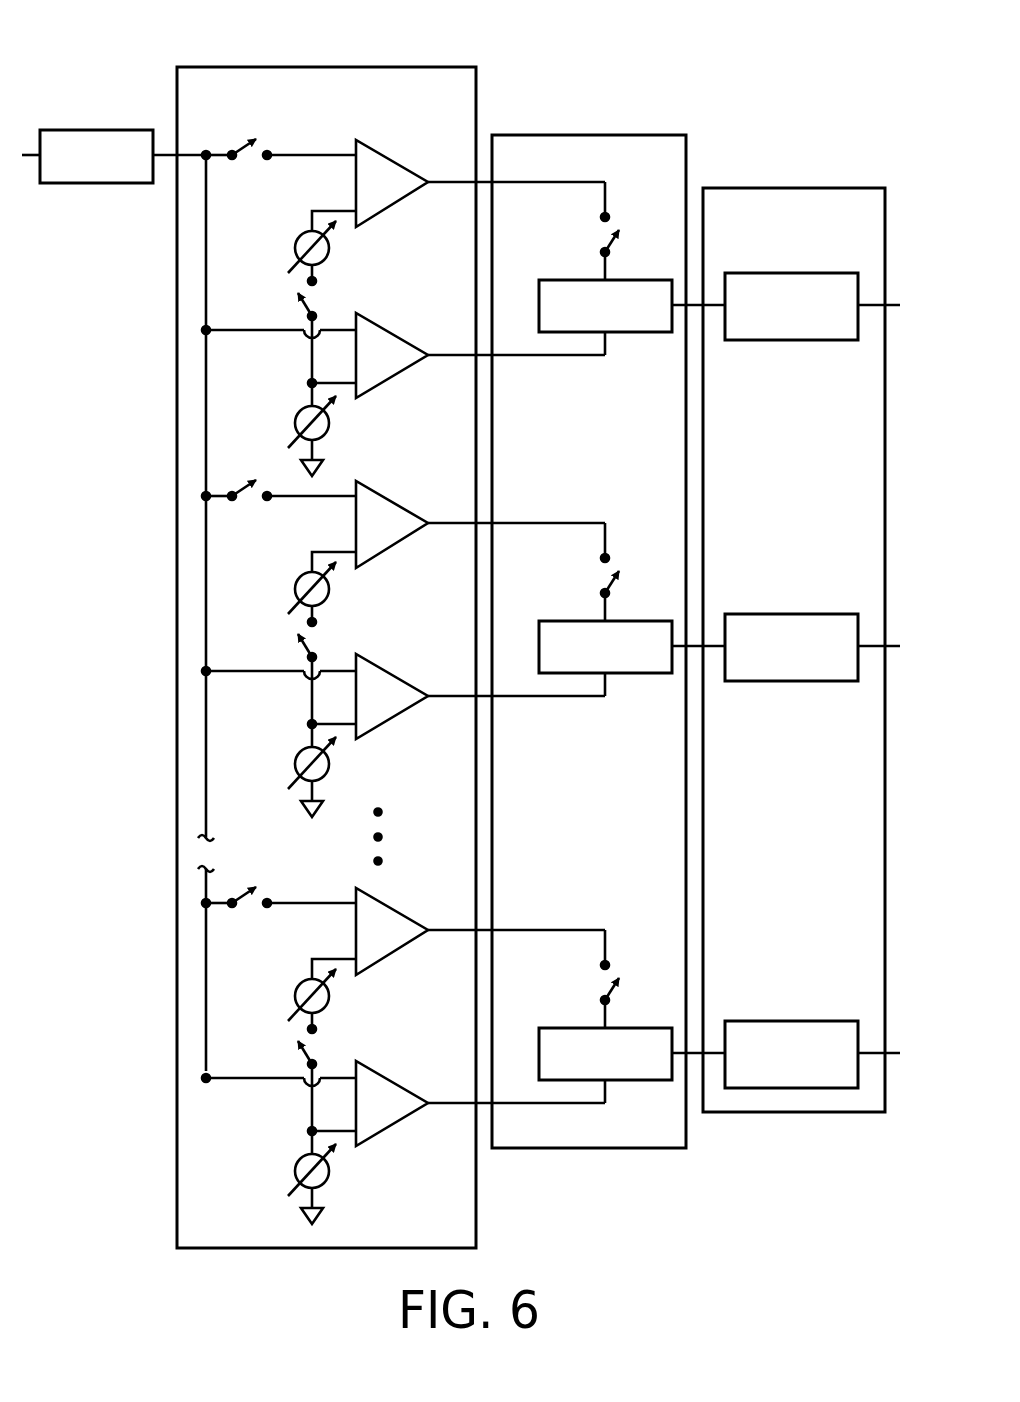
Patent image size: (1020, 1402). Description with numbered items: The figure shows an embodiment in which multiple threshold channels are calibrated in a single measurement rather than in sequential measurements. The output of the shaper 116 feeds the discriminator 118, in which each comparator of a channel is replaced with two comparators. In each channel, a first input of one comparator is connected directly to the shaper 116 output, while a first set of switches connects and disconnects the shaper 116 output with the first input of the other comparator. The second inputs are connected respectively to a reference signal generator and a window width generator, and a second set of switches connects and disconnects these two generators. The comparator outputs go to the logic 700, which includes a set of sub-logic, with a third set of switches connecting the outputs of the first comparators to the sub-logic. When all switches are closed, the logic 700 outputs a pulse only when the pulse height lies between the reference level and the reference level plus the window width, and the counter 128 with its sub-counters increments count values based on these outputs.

The shaper 116 is at (100, 130).
The discriminator 118 is at (325, 67).
The logic 700 is at (580, 135).
The counter 128 is at (792, 188).